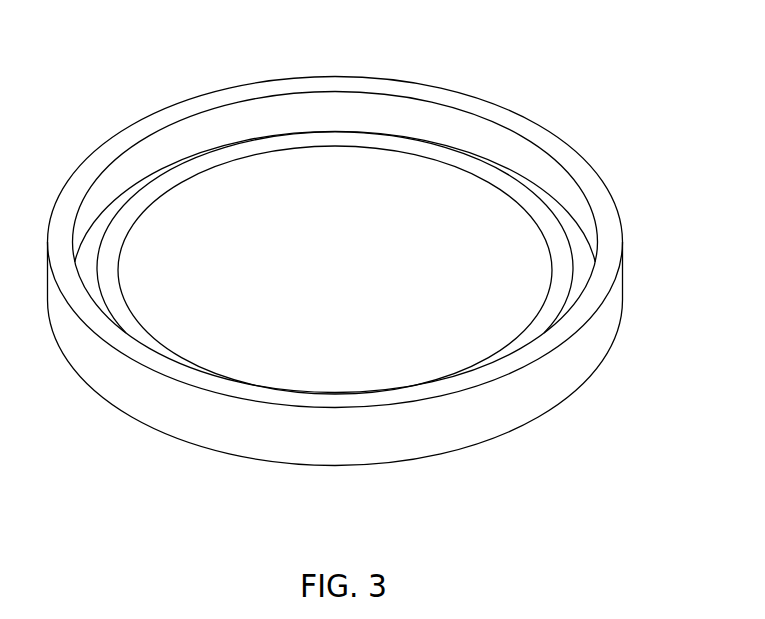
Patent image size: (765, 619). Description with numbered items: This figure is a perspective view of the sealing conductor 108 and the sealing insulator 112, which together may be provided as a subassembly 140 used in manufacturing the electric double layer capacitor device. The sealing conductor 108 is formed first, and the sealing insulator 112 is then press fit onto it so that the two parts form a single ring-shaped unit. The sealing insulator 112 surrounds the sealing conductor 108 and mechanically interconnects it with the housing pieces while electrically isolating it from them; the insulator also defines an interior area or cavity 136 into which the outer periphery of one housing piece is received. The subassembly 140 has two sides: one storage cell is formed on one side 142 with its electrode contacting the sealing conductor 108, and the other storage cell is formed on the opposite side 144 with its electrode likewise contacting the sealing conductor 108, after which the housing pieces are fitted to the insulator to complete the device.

The subassembly 140 is at (380, 272).
The sealing insulator 112 is at (380, 300).
The side of the assembly 142 is at (430, 458).
The side of the assembly 144 is at (288, 168).
The interior area or cavity 136 is at (584, 262).
The sealing conductor 108 is at (403, 195).